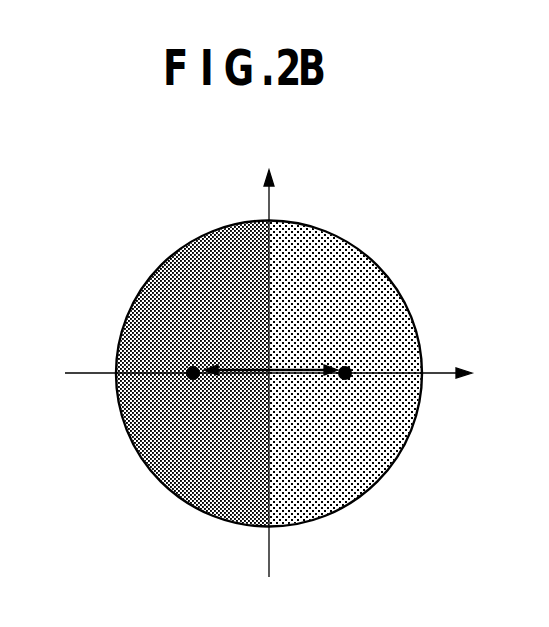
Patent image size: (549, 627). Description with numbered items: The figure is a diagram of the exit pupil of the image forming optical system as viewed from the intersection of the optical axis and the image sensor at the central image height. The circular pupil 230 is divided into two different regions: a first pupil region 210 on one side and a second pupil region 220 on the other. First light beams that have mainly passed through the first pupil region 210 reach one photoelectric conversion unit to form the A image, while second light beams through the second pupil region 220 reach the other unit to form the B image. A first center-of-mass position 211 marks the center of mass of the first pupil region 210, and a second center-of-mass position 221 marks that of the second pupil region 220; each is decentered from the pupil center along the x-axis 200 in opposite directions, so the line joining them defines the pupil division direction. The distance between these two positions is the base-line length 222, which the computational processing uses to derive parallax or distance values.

The x-axis 200 is at (87, 373).
The first pupil region 210 is at (325, 470).
The second pupil region 220 is at (210, 470).
The first center-of-mass position 211 is at (349, 366).
The second center-of-mass position 221 is at (193, 377).
The base-line length 222 is at (293, 370).
The pupil 230 is at (395, 463).